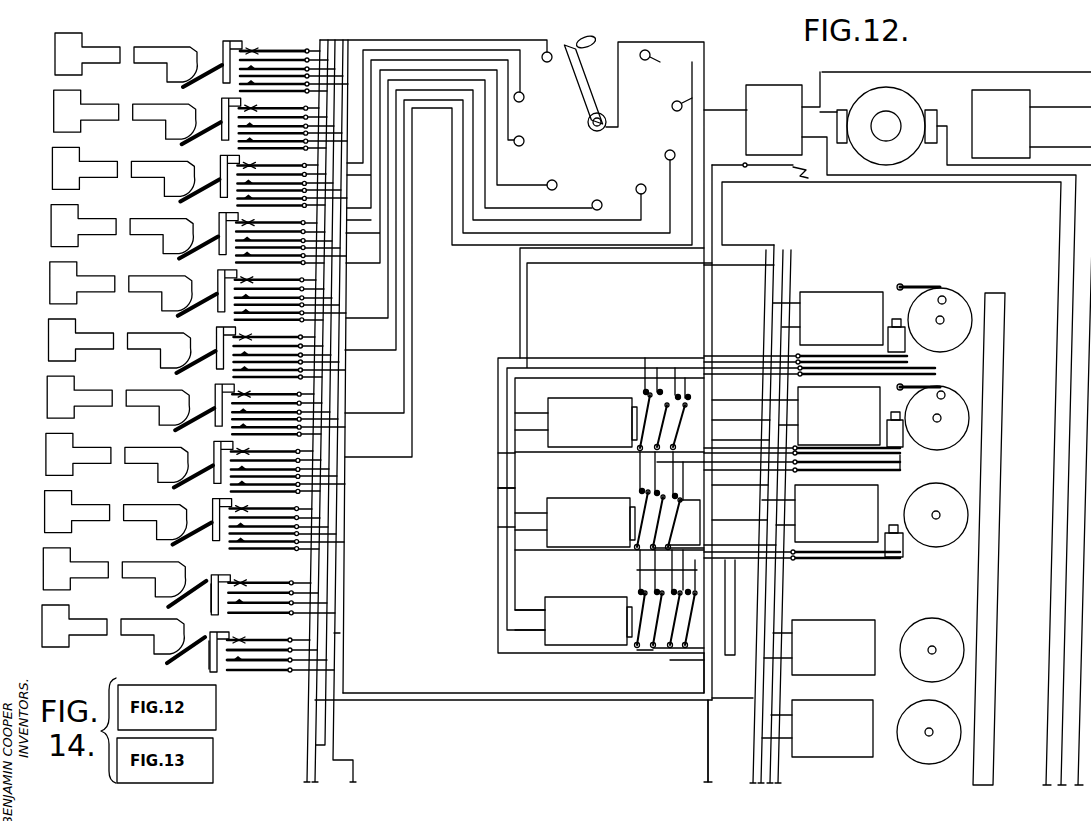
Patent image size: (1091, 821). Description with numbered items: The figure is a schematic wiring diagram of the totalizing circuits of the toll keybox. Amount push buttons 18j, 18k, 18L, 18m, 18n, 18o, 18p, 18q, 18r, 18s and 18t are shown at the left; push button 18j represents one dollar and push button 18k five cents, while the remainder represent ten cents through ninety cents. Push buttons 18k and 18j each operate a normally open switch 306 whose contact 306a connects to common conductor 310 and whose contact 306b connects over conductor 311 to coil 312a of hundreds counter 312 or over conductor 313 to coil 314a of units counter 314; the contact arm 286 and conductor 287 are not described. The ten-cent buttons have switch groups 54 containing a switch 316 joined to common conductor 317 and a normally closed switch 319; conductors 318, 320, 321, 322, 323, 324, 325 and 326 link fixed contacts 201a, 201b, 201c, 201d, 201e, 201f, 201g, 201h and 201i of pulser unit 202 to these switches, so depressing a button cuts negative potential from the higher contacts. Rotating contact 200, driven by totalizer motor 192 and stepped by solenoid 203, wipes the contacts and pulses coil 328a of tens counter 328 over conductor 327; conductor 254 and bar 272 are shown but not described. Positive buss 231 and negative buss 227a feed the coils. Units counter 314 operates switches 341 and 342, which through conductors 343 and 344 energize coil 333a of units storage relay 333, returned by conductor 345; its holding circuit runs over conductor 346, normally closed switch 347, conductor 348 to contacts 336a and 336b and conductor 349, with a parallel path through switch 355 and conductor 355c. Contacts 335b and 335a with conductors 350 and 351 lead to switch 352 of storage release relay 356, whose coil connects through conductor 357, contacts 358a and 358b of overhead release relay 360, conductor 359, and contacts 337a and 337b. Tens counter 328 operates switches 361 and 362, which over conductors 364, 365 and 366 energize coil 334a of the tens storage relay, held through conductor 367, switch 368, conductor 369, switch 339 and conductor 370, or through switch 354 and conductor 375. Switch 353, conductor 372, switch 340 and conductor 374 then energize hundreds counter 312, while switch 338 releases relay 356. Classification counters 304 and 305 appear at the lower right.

The amount push button 18L is at (55, 57).
The amount push button 18m is at (54, 114).
The amount push button 18n is at (52, 171).
The amount push button 18o is at (51, 229).
The amount push button 18p is at (50, 286).
The amount push button 18q is at (48, 343).
The amount push button 18r is at (47, 400).
The amount push button 18s is at (46, 457).
The amount push button 18t is at (45, 515).
The amount push button 18k is at (43, 572).
The amount push button 18j is at (52, 643).
The switch group 54 is at (194, 364).
The switch 316 is at (260, 92).
The normally closed switch 319 is at (262, 48).
The normally open switch 306 is at (248, 590).
The contact 306a is at (276, 648).
The contact 306b is at (276, 668).
The contact arm 286 is at (232, 688).
The common conductor 310 is at (330, 200).
The common conductor 317 is at (345, 40).
The conductor 318 is at (385, 50).
The conductor 320 is at (420, 60).
The conductor 321 is at (465, 70).
The conductor 322 is at (388, 280).
The conductor 323 is at (397, 318).
The conductor 324 is at (405, 360).
The conductor 325 is at (412, 413).
The conductor 326 is at (412, 450).
The fixed contact 201a is at (543, 68).
The fixed contact 201b is at (524, 101).
The fixed contact 201c is at (524, 141).
The fixed contact 201d is at (562, 176).
The fixed contact 201e is at (593, 201).
The fixed contact 201f is at (650, 178).
The fixed contact 201g is at (667, 151).
The fixed contact 201h is at (661, 100).
The fixed contact 201i is at (642, 65).
The rotating contact 200 is at (582, 68).
The pulser unit 202 is at (600, 30).
The conductor 327 is at (704, 42).
The conductor 359 is at (722, 160).
The overhead indicator release relay 360 is at (775, 75).
The contact 358a is at (808, 180).
The contact 358b is at (790, 172).
The totalizer motor 192 is at (905, 105).
The tens counter 328 is at (895, 176).
The solenoid 203 is at (1030, 100).
The conductor 254 is at (1048, 678).
The conductor 313 is at (766, 310).
The positive buss 231 is at (772, 325).
The conductor 311 is at (773, 597).
The conductor 372 is at (732, 629).
The coil 314a is at (828, 318).
The units counter 314 is at (955, 292).
The normally open switch 341 is at (925, 275).
The conductor 343 is at (805, 280).
The conductor 344 is at (855, 282).
The normally open switch 342 is at (908, 356).
The switch 361 is at (945, 375).
The conductor 365 is at (835, 372).
The coil 328a is at (825, 416).
The switch 362 is at (905, 460).
The normally closed switch 347 is at (880, 478).
The coil 312a is at (820, 513).
The hundreds counter 312 is at (925, 503).
The switch 368 is at (870, 565).
The conductor 369 is at (775, 575).
The conductor 367 is at (740, 563).
The conductor 366 is at (498, 448).
The conductor 350 is at (741, 403).
The conductor 364 is at (741, 419).
The conductor 348 is at (740, 437).
The conductor 346 is at (740, 481).
The conductor 374 is at (739, 511).
The bar 272 is at (1000, 445).
The counter 305 is at (887, 630).
The counter 304 is at (887, 708).
The conductor 345 is at (565, 368).
The conductor 349 is at (609, 489).
The conductor 357 is at (498, 585).
The coil 333a is at (576, 422).
The units storage relay 333 is at (592, 397).
The coil 334a is at (575, 522).
The conductor 351 is at (575, 455).
The contact 335a is at (645, 358).
The contact 335b is at (657, 368).
The contact 336a is at (680, 464).
The contact 336b is at (675, 368).
The contact 337a is at (692, 426).
The contact 337b is at (690, 378).
The normally open switch 338 is at (640, 480).
The conductor 370 is at (535, 480).
The normally open switch 339 is at (670, 490).
The normally open switch 340 is at (686, 524).
The normally open switch 352 is at (640, 575).
The switch 353 is at (655, 580).
The normally closed switch 354 is at (671, 599).
The switch 355 is at (698, 599).
The conductor 355c is at (700, 662).
The storage release relay 356 is at (607, 598).
The conductor 375 is at (680, 655).
The negative buss 227a is at (708, 692).
The conductor 287 is at (340, 633).